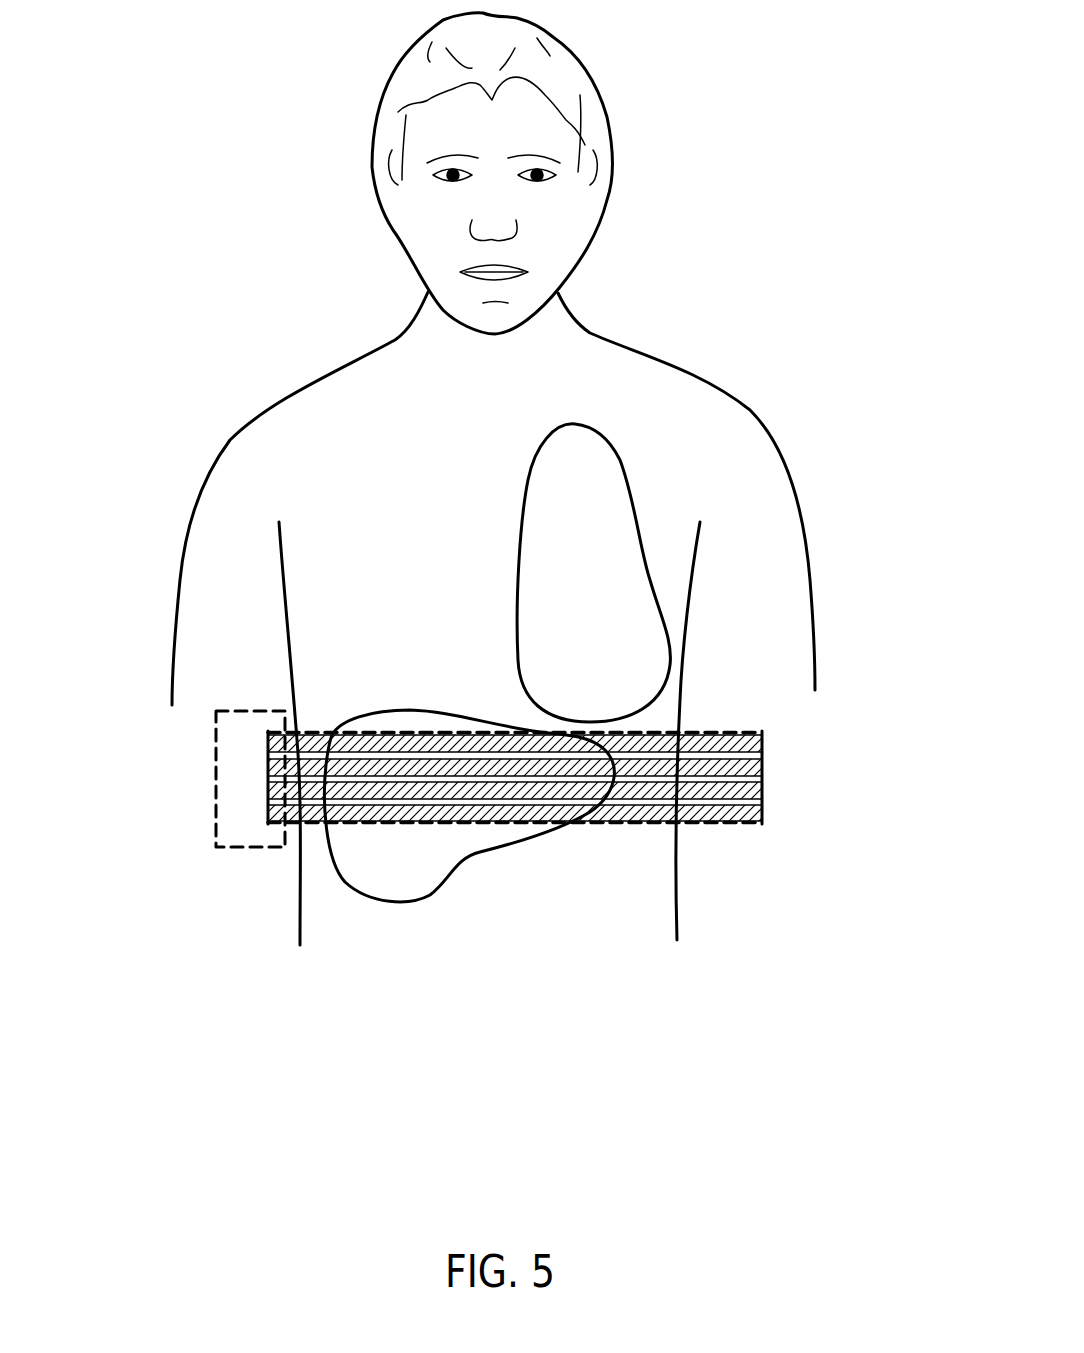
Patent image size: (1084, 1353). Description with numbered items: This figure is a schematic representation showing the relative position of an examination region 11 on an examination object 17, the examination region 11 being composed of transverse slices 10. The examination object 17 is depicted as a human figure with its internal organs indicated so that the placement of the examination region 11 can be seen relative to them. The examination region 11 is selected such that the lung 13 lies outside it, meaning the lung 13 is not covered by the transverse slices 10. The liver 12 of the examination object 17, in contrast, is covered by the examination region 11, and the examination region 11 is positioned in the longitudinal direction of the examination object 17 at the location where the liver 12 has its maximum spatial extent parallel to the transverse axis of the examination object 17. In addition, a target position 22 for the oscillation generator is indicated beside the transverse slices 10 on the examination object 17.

The transverse slices 10 is at (763, 787).
The examination region 11 is at (728, 825).
The liver 12 is at (385, 905).
The lung 13 is at (596, 425).
The examination object 17 is at (763, 525).
The target position 22 is at (216, 778).